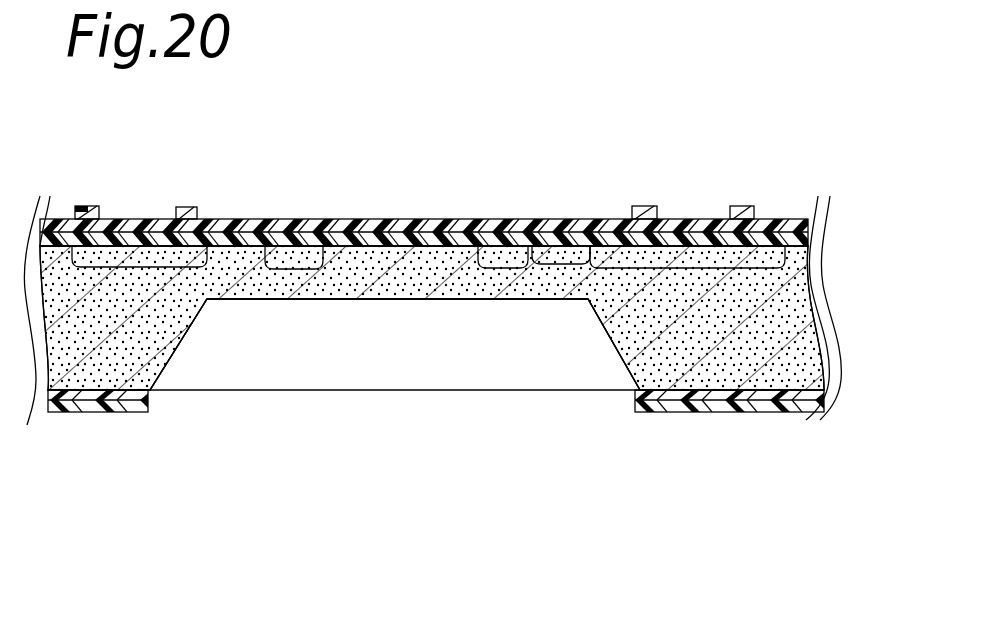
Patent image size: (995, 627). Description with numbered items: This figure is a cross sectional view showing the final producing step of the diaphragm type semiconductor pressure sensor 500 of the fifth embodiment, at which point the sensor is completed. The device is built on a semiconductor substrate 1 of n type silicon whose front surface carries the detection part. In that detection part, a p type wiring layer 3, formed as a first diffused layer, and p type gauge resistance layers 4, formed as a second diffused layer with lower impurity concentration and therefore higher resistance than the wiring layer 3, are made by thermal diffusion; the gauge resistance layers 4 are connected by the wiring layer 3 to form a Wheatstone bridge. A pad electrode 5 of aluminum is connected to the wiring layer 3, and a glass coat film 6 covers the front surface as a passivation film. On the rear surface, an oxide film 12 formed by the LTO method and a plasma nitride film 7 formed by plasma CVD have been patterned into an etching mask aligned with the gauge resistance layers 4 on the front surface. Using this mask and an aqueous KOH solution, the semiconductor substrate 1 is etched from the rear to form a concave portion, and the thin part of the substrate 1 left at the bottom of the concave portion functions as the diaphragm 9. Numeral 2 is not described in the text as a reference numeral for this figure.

The semiconductor substrate 1 is at (670, 308).
The element region 2 is at (292, 219).
The wiring layer 3 is at (502, 219).
The gauge resistance layer 4 is at (575, 219).
The pad electrode 5 is at (138, 219).
The glass coat film 6 is at (338, 219).
The plasma nitride film 7 is at (130, 412).
The diaphragm 9 is at (308, 302).
The oxide film 12 is at (68, 412).
The semiconductor pressure sensor 500 is at (775, 448).